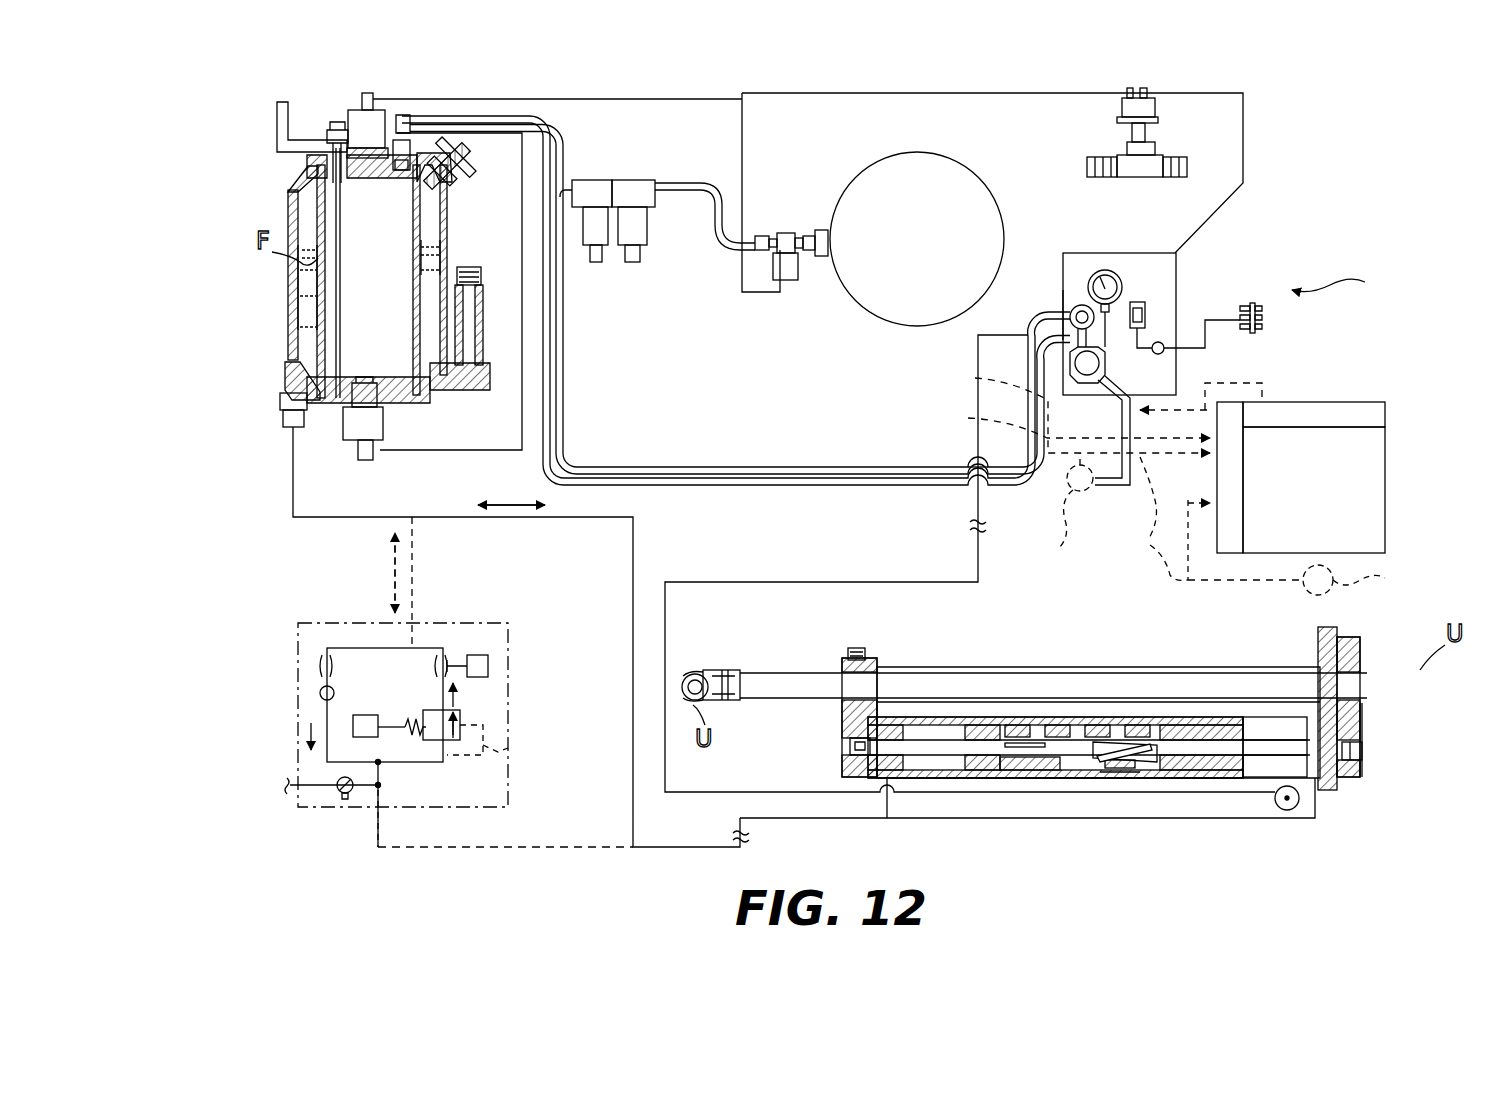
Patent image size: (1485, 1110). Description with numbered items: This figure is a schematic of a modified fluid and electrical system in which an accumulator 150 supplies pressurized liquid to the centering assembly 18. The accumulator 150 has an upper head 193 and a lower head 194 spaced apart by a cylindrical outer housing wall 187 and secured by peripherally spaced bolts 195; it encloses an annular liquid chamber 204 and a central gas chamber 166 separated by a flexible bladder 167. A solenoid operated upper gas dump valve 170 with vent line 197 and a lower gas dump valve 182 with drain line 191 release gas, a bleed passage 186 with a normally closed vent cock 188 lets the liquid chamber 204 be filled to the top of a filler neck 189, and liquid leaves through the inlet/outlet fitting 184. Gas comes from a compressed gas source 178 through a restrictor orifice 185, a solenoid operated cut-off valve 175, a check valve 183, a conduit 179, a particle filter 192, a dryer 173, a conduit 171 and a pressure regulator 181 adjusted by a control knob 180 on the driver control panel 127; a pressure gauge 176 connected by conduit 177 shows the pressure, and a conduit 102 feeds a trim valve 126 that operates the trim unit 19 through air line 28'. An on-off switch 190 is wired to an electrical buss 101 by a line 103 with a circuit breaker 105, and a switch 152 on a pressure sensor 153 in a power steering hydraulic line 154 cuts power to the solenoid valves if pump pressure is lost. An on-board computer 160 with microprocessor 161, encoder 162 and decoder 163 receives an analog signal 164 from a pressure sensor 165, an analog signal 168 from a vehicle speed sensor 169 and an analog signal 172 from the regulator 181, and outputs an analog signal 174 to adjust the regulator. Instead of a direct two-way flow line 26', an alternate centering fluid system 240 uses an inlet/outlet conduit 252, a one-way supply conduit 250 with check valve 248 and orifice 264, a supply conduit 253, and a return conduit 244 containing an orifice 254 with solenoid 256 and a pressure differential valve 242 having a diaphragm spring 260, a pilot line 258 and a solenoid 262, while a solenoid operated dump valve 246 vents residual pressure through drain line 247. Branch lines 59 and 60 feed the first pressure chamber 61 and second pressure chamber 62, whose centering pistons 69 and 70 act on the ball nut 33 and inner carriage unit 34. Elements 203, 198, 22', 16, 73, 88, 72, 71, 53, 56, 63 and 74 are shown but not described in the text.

The accumulator 150 is at (451, 291).
The upper head 193 is at (296, 178).
The outer housing wall 187 is at (288, 262).
The sleeve 203 is at (285, 385).
The inlet/outlet fitting 184 is at (282, 420).
The annular liquid chamber 204 is at (300, 300).
The central gas chamber 166 is at (359, 281).
The flexible bladder 167 is at (412, 352).
The bolts 195 is at (345, 182).
The piston 198 is at (447, 240).
The upper gas dump valve 170 is at (345, 110).
The vent line 197 is at (375, 98).
The vent cock 188 is at (442, 150).
The bleed passage 186 is at (445, 152).
The lower head 194 is at (320, 405).
The lower gas dump valve 182 is at (384, 418).
The drain line 191 is at (368, 462).
The filler neck 189 is at (488, 350).
The conduit 171 is at (688, 475).
The conduit 102 is at (1030, 318).
The air line 28' is at (970, 563).
The branch air line 59 is at (888, 812).
The branch air line 60 is at (1028, 818).
The supply conduit 253 is at (572, 847).
The direct two-way flow line 26' is at (521, 548).
The compressed gas source 178 is at (878, 320).
The dryer 173 is at (628, 258).
The particle filter 192 is at (650, 258).
The conduit 179 is at (680, 182).
The check valve 183 is at (760, 235).
The restrictor orifice 185 is at (810, 232).
The solenoid operated cut-off valve 175 is at (787, 280).
The switch 152 is at (1120, 110).
The pressure sensor 153 is at (1128, 148).
The hydraulic line 154 is at (1160, 158).
The driver control panel 127 is at (1148, 253).
The trim valve 126 is at (1063, 290).
The pressure gauge 176 is at (1100, 270).
The control knob 180 is at (1068, 325).
The pressure regulator 181 is at (1070, 360).
The on-off switch 190 is at (1140, 302).
The circuit breaker 105 is at (1200, 330).
The line 103 is at (1205, 350).
The electrical buss 101 is at (1258, 298).
The control system 22' is at (1347, 277).
The on-board computer 160 is at (1330, 483).
The encoder 162 is at (1240, 553).
The decoder 163 is at (1370, 420).
The microprocessor 161 is at (1365, 532).
The conduit 177 is at (1120, 380).
The analog signal 174 is at (1064, 410).
The analog signal 172 is at (1058, 421).
The pressure sensor 165 is at (1051, 507).
The analog signal 164 is at (1126, 504).
The analog signal 168 is at (1141, 546).
The vehicle speed sensor 169 is at (1307, 580).
The alternate centering fluid system 240 is at (318, 623).
The inlet/outlet conduit 252 is at (432, 578).
The one-way supply conduit 250 is at (327, 655).
The orifice 264 is at (327, 660).
The orifice 254 is at (445, 660).
The remotely controlled solenoid 256 is at (482, 655).
The check valve 248 is at (320, 693).
The drain line 247 is at (293, 785).
The return conduit 244 is at (398, 762).
The diaphragm spring 260 is at (410, 735).
The pressure differential valve 242 is at (460, 716).
The pilot line 258 is at (512, 758).
The solenoid operated dump valve 246 is at (345, 795).
The remotely controlled solenoid 262 is at (378, 786).
The rod 16 is at (772, 683).
The housing tube 73 is at (900, 660).
The centering assembly 18 is at (880, 655).
The nut 88 is at (848, 650).
The second pressure chamber 62 is at (930, 730).
The centering piston 70 is at (960, 742).
The nut 72 is at (1178, 738).
The centering piston 69 is at (1250, 725).
The first pressure chamber 61 is at (1265, 725).
The flange 71 is at (1337, 635).
The end cap 53 is at (1360, 710).
The bearing 56 is at (1362, 752).
The plate 63 is at (1362, 776).
The trim unit 19 is at (1305, 808).
The clutch plate 74 is at (1035, 770).
The inner carriage unit 34 is at (1098, 765).
The ball nut 33 is at (1125, 765).